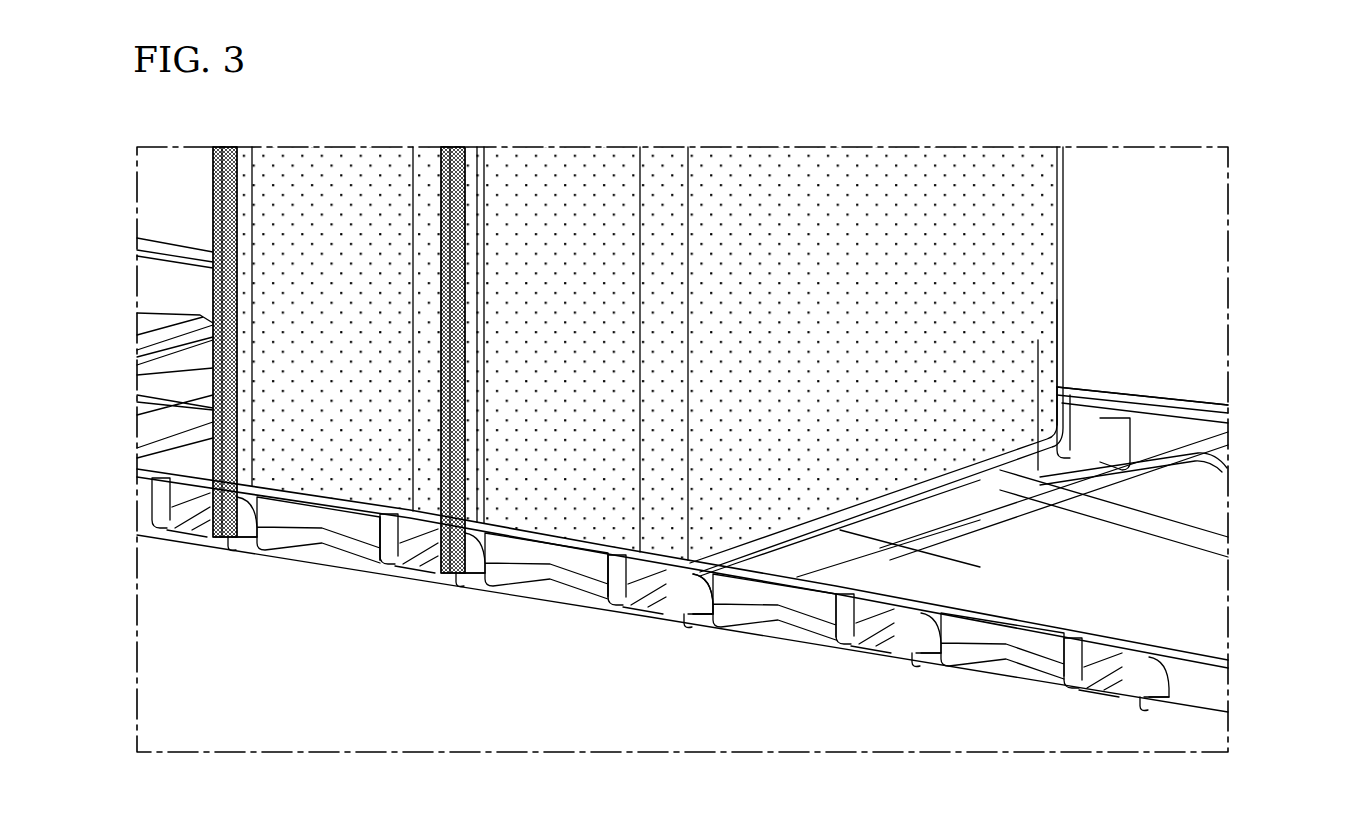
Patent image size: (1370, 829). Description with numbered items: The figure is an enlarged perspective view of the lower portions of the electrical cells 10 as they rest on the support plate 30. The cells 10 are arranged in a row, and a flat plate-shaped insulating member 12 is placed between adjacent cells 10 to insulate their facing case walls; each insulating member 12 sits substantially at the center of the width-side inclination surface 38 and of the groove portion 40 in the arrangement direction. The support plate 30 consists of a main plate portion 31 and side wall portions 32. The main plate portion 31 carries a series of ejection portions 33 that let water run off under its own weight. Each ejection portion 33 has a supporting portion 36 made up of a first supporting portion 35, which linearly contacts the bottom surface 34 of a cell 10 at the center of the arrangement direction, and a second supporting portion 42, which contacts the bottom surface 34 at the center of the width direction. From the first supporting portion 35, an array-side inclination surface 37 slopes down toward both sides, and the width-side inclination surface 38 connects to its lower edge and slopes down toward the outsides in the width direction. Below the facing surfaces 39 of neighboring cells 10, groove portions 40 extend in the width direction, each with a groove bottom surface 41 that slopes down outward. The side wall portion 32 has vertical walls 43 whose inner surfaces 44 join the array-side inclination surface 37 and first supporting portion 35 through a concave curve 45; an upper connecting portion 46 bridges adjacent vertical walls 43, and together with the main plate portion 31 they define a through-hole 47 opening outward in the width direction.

The electrical cell 10 is at (334, 160).
The insulating member 12 is at (237, 160).
The support plate 30 is at (1166, 329).
The main plate portion 31 is at (1170, 400).
The side wall portion 32 is at (1085, 415).
The ejection portion 33 is at (812, 548).
The bottom surface 34 is at (398, 548).
The first supporting portion 35 is at (968, 597).
The supporting portion 36 is at (1054, 476).
The array-side inclination surface 37 is at (1116, 472).
The width-side inclination surface 38 is at (1018, 510).
The facing surface 39 is at (738, 166).
The groove portion 40 is at (680, 692).
The groove bottom surface 41 is at (253, 527).
The second supporting portion 42 is at (940, 530).
The vertical wall 43 is at (341, 527).
The inner surface 44 is at (1158, 490).
The concave curve 45 is at (1200, 478).
The upper connecting portion 46 is at (168, 480).
The through-hole 47 is at (250, 522).